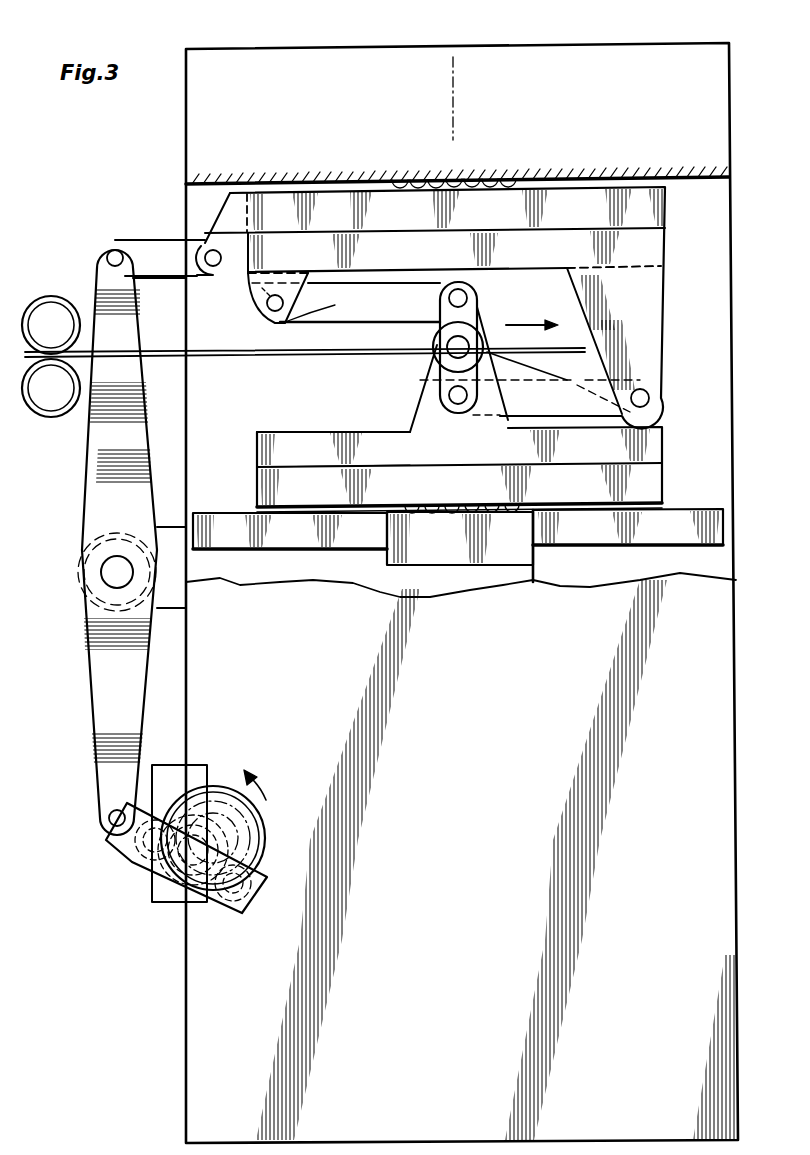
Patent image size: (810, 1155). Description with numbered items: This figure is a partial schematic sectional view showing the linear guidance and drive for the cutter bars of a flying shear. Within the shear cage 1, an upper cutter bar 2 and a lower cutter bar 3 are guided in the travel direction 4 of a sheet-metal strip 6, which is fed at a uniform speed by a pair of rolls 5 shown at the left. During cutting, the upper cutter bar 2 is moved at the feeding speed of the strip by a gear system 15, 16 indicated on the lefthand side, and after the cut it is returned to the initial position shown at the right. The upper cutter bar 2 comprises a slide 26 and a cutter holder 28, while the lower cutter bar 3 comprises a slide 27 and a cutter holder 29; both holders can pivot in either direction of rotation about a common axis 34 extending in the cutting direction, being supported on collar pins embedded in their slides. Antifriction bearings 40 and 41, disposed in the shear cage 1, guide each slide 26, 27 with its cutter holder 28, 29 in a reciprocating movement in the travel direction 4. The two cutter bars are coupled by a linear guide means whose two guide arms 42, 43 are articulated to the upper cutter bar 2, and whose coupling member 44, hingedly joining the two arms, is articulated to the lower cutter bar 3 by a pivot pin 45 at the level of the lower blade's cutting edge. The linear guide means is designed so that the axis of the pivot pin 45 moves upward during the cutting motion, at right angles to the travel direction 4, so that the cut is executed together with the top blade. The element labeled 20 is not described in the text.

The shear cage 1 is at (718, 78).
The upper cutter bar 2 is at (650, 240).
The lower cutter bar 3 is at (655, 492).
The travel direction 4 is at (509, 325).
The pair of rolls 5 is at (58, 315).
The sheet-metal strip 6 is at (172, 358).
The gear system 15 is at (138, 870).
The gear system 16 is at (118, 732).
The support block 20 is at (524, 567).
The slide 26 is at (648, 201).
The slide 27 is at (645, 480).
The cutter holder 28 is at (650, 258).
The cutter holder 29 is at (306, 463).
The common axis 34 is at (461, 75).
The antifriction bearings 40 is at (505, 177).
The antifriction bearings 41 is at (540, 520).
The guide arm 42 is at (262, 315).
The guide arm 43 is at (628, 414).
The coupling member 44 is at (445, 388).
The pivot pin 45 is at (445, 356).